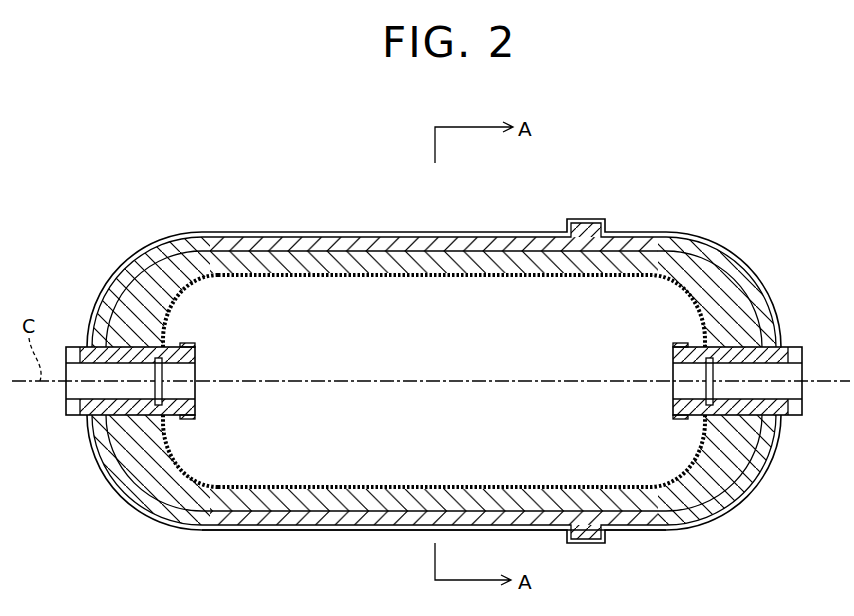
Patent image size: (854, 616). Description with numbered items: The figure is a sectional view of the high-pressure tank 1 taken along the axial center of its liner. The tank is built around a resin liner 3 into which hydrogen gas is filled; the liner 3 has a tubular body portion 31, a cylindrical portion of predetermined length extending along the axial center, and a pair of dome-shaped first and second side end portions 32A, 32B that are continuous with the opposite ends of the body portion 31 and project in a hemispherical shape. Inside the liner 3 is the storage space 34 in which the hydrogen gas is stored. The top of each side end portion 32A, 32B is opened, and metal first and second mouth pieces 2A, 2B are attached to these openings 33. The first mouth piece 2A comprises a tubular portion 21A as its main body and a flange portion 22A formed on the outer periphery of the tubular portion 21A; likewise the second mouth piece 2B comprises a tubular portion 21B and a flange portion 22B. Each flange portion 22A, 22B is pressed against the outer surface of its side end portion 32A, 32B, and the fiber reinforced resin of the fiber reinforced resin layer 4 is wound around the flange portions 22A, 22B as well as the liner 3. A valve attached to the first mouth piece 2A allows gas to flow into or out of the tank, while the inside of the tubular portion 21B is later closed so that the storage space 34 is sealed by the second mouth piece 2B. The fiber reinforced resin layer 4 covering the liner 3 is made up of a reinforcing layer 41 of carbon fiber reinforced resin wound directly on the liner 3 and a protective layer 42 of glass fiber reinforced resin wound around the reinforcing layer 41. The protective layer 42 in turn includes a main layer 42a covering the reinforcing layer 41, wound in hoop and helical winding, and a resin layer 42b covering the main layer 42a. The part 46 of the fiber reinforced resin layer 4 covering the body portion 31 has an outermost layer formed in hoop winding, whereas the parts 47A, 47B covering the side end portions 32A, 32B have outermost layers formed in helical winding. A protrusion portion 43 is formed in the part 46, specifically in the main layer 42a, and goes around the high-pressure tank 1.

The high-pressure tank 1 is at (702, 144).
The first mouth piece 2A is at (72, 420).
The second mouth piece 2B is at (790, 420).
The tubular portion 21A is at (103, 345).
The tubular portion 21B is at (765, 345).
The flange portion 22A is at (178, 417).
The flange portion 22B is at (685, 417).
The opening 33 is at (93, 390).
The liner 3 is at (526, 278).
The body portion 31 is at (384, 272).
The first side end portion 32A is at (147, 268).
The second side end portion 32B is at (726, 262).
The storage space 34 is at (506, 415).
The fiber reinforced resin layer 4 is at (650, 243).
The reinforcing layer 41 is at (494, 263).
The protective layer 42 is at (344, 172).
The main layer 42a is at (275, 247).
The resin layer 42b is at (321, 235).
The protrusion portion 43 is at (588, 226).
The part covering the body portion 46 is at (388, 512).
The part covering the first side end portion 47A is at (150, 487).
The part covering the second side end portion 47B is at (716, 487).